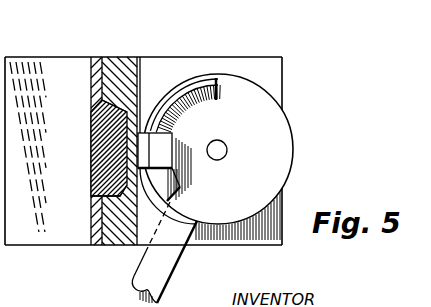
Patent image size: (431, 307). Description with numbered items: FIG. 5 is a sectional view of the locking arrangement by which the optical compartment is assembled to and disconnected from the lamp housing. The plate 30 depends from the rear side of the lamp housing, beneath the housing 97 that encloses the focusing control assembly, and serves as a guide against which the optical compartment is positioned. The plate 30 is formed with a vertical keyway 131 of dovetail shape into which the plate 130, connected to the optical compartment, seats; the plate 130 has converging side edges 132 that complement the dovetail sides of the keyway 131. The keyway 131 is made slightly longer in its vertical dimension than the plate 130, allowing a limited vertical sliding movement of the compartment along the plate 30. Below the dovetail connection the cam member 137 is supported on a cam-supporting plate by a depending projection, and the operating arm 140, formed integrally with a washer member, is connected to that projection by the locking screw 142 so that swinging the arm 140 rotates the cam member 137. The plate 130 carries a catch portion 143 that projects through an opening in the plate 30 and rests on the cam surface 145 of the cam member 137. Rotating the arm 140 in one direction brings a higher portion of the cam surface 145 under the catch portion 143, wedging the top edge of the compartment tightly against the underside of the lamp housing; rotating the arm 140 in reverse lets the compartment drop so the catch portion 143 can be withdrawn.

The plate 30 is at (124, 57).
The housing 97 is at (91, 74).
The plate 130 is at (104, 145).
The vertical keyway 131 is at (106, 103).
The converging side edges 132 is at (112, 199).
The cam member 137 is at (289, 136).
The operating arm 140 is at (133, 275).
The locking screw 142 is at (217, 160).
The catch portion 143 is at (166, 141).
The cam surface 145 is at (187, 84).